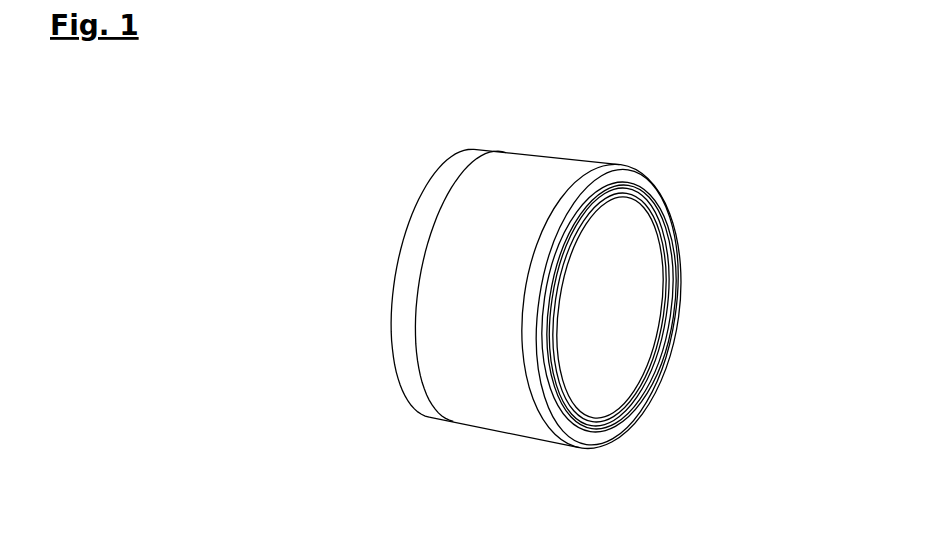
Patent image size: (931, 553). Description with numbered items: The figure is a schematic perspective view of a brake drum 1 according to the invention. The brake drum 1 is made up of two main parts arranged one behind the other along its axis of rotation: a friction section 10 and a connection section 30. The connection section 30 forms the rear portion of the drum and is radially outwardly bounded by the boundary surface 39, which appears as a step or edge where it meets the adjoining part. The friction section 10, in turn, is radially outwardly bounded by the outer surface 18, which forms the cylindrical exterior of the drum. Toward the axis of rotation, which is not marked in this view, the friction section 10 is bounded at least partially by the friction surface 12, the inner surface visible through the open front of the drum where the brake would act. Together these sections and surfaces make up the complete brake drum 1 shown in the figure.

The brake drum 1 is at (525, 132).
The friction section 10 is at (525, 462).
The friction surface 12 is at (625, 318).
The outer surface 18 is at (480, 403).
The connection section 30 is at (377, 281).
The boundary surface 39 is at (405, 363).